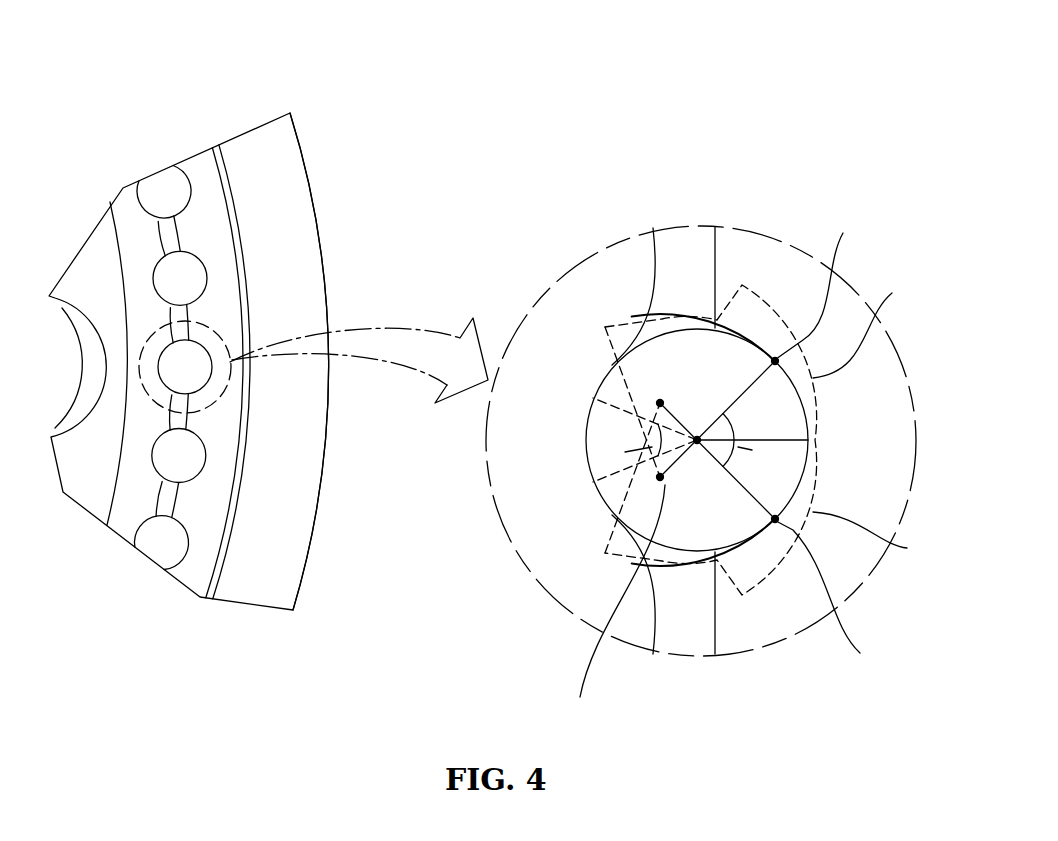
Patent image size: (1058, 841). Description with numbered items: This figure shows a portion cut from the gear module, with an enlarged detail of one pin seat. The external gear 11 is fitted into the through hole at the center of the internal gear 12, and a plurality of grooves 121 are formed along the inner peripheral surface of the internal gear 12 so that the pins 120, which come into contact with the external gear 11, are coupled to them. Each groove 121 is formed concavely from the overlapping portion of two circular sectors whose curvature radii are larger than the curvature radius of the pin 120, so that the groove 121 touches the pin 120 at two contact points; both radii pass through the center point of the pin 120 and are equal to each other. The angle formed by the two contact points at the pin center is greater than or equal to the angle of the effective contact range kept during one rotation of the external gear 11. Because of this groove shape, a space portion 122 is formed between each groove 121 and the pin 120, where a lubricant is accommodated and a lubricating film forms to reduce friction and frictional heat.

The external gear 11 is at (133, 250).
The internal gear 12 is at (298, 142).
The pin 120 is at (183, 280).
The groove 121 is at (810, 453).
The space portion 122 is at (815, 423).